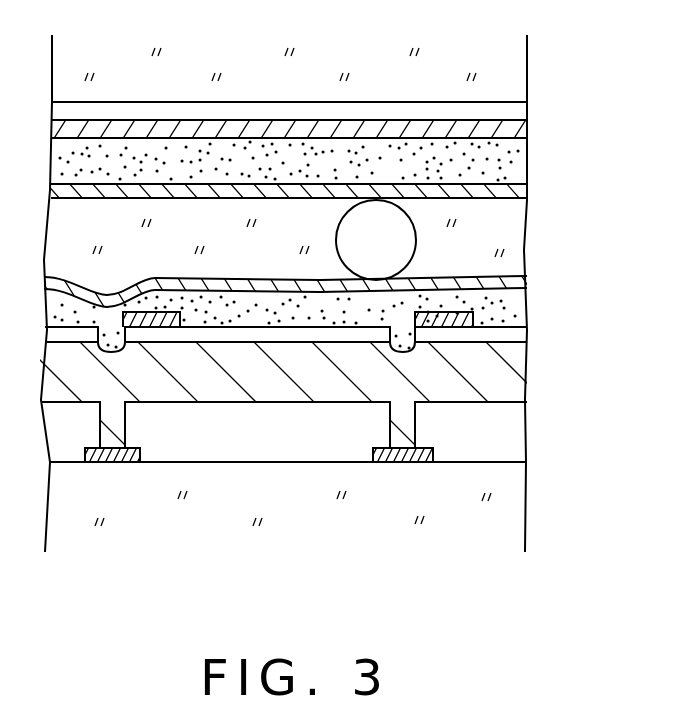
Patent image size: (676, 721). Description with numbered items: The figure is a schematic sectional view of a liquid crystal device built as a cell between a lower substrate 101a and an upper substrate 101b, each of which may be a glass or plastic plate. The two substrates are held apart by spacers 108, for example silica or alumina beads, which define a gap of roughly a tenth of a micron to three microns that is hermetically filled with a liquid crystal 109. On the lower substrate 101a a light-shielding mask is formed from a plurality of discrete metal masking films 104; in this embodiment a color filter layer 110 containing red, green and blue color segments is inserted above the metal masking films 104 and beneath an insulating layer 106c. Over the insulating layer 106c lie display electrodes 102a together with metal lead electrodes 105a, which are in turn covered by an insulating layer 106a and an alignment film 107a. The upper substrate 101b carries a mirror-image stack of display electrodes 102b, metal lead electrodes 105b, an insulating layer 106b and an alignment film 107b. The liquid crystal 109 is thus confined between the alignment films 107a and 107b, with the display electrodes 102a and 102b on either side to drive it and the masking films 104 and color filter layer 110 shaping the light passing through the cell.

The lower substrate 101a is at (325, 512).
The upper substrate 101b is at (505, 66).
The display electrodes 102a is at (515, 345).
The display electrodes 102b is at (515, 112).
The metal masking films 104 is at (405, 464).
The metal lead electrodes 105a is at (512, 334).
The metal lead electrodes 105b is at (510, 132).
The insulating layer 106a is at (510, 303).
The insulating layer 106b is at (510, 170).
The insulating layer 106c is at (512, 385).
The alignment film 107a is at (505, 283).
The alignment film 107b is at (510, 196).
The spacers 108 is at (405, 243).
The liquid crystal 109 is at (510, 263).
The color filter layer 110 is at (512, 441).